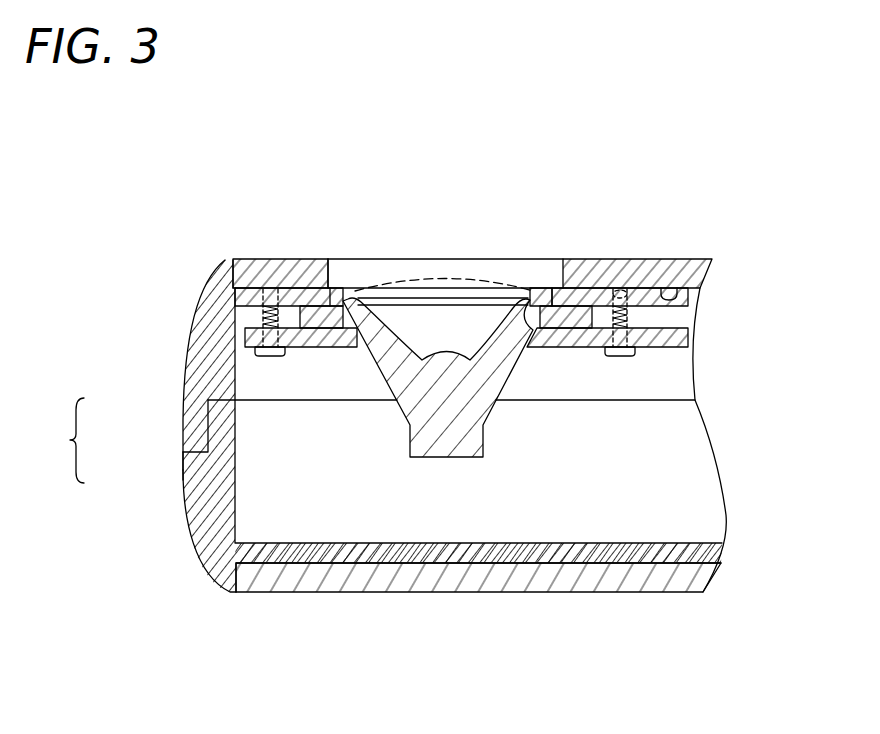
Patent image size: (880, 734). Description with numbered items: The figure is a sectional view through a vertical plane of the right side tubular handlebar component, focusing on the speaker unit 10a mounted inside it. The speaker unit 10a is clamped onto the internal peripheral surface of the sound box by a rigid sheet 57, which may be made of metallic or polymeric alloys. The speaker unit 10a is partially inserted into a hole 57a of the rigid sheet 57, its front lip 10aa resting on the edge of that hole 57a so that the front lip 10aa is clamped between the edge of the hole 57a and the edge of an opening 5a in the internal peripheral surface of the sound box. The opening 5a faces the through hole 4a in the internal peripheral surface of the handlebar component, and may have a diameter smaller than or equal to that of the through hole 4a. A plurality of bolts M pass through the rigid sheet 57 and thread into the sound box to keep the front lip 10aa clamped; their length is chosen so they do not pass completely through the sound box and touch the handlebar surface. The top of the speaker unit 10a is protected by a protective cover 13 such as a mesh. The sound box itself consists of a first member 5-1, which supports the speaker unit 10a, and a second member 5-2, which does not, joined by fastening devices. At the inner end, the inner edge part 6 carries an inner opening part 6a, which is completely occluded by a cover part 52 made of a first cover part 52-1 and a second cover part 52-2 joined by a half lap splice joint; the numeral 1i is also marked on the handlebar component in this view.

The inner edge part 6 is at (265, 258).
The inner opening part 6a is at (237, 575).
The first member 5-1 is at (191, 330).
The second member 5-2 is at (188, 540).
The cover part 52 is at (61, 440).
The first cover part 52-1 is at (184, 413).
The second cover part 52-2 is at (185, 472).
The through hole 4a is at (562, 278).
The housing opening 1i is at (672, 290).
The opening 5a is at (535, 290).
The front lip 10aa is at (329, 262).
The hole 57a is at (517, 290).
The speaker unit 10a is at (447, 352).
The protective cover 13 is at (413, 280).
The rigid sheet 57 is at (673, 335).
The bolts M is at (262, 358).